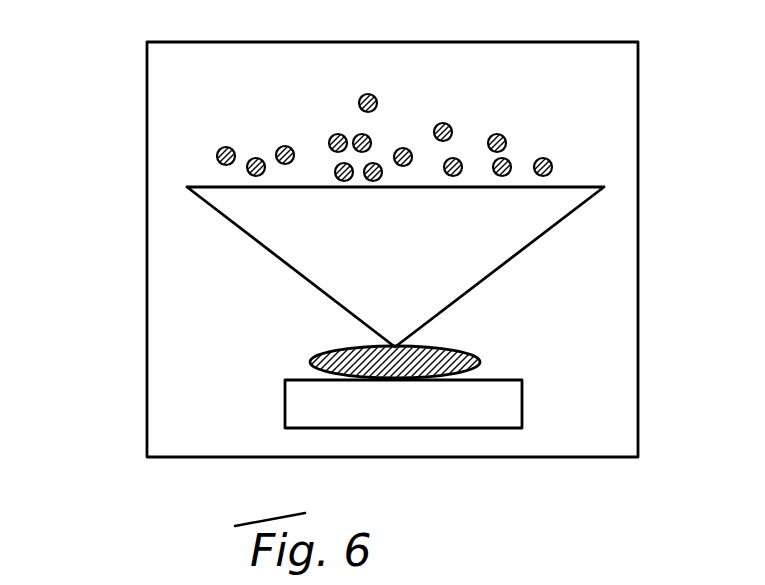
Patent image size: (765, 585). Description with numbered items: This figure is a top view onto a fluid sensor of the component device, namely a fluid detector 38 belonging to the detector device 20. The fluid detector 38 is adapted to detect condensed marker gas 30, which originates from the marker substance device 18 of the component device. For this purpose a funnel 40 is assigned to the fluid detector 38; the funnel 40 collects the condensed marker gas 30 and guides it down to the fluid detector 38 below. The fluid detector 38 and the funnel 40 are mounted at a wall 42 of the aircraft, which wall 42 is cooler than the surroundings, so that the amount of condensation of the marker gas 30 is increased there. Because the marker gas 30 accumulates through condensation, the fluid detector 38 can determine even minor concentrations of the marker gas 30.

The marker substance device 18 is at (550, 397).
The detector device 20 is at (184, 390).
The marker gas 30 is at (500, 138).
The fluid detector 38 is at (483, 417).
The funnel 40 is at (503, 235).
The wall 42 is at (172, 262).